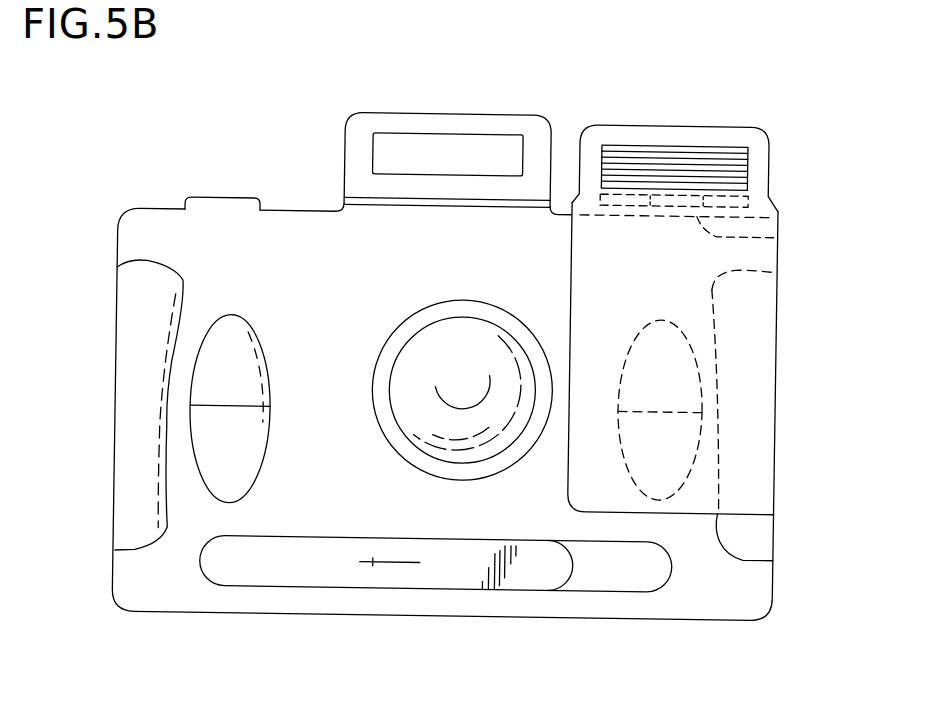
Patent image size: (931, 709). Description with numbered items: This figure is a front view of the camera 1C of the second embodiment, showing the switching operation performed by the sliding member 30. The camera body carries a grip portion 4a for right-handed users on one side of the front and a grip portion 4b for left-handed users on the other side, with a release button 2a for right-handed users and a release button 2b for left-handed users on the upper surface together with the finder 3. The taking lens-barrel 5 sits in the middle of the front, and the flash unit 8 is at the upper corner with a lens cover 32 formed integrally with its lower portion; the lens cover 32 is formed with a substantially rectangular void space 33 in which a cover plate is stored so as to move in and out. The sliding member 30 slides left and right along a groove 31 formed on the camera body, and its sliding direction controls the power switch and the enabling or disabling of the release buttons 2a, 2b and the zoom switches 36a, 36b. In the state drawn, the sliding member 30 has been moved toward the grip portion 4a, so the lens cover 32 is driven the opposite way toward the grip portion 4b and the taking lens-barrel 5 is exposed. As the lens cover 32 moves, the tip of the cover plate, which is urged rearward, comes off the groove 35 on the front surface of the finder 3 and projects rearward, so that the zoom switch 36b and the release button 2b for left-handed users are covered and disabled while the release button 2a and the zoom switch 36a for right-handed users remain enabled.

The camera 1C is at (556, 110).
The release button for right-handed users 2a is at (236, 200).
The release button for left-handed users 2b is at (777, 228).
The finder 3 is at (415, 138).
The groove 35 is at (371, 196).
The grip portion for right-handed users 4a is at (124, 288).
The grip portion for left-handed users 4b is at (763, 438).
The taking lens-barrel 5 is at (382, 359).
The flash unit 8 is at (675, 150).
The sliding member 30 is at (340, 560).
The groove 31 is at (609, 583).
The lens cover 32 is at (741, 491).
The void space 33 is at (747, 191).
The zoom switch for right-handed users 36a is at (188, 639).
The zoom switch for left-handed users 36b is at (682, 495).